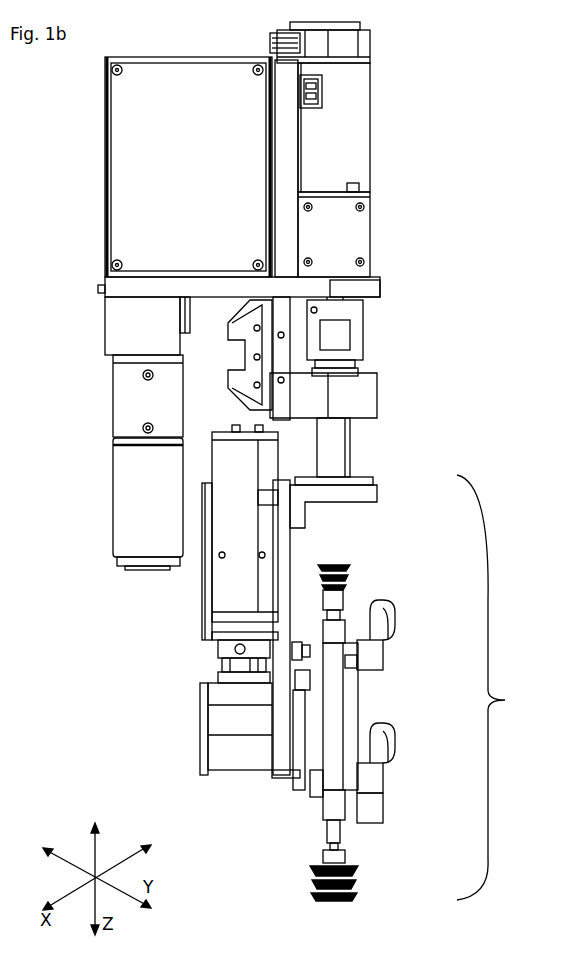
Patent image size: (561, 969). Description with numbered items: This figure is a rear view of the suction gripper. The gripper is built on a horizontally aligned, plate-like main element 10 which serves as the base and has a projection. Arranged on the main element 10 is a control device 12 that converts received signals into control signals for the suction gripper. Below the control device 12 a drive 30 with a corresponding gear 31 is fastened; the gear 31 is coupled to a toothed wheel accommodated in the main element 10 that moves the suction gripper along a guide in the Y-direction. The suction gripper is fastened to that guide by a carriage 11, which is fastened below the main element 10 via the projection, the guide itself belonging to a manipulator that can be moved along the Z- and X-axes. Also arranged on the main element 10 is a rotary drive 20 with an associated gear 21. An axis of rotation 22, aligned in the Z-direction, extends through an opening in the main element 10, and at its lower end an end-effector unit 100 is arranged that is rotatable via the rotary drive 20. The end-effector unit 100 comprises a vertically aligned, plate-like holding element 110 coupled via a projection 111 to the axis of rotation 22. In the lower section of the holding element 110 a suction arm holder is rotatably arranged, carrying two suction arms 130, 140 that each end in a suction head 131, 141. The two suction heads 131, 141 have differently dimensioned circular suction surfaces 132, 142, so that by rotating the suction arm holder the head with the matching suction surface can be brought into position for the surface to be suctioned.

The main element 10 is at (200, 290).
The carriage 11 is at (262, 345).
The control device 12 is at (150, 158).
The rotary drive 20 is at (345, 128).
The gear 21 is at (345, 238).
The axis of rotation 22 is at (355, 405).
The drive 30 is at (150, 510).
The gear 31 is at (148, 396).
The end-effector unit 100 is at (500, 687).
The holding element 110 is at (282, 598).
The projection 111 is at (340, 481).
The suction arm 130 is at (335, 665).
The suction head 131 is at (345, 576).
The suction surface 132 is at (334, 560).
The suction arm 140 is at (340, 778).
The suction head 141 is at (345, 862).
The suction surface 142 is at (332, 899).